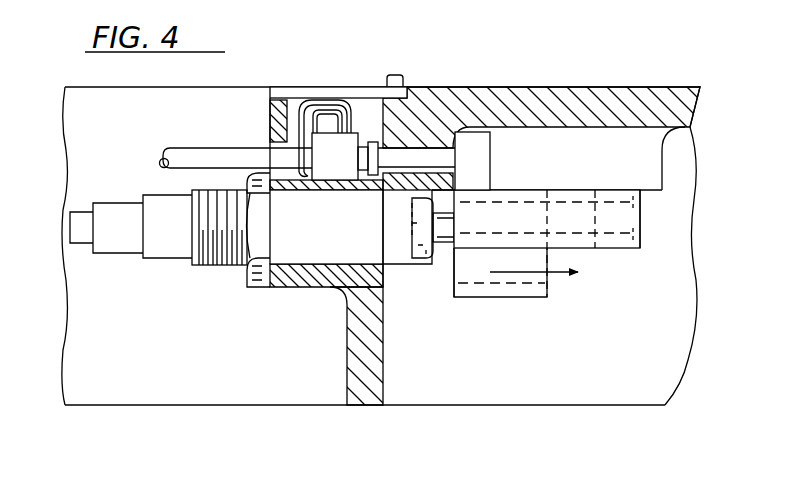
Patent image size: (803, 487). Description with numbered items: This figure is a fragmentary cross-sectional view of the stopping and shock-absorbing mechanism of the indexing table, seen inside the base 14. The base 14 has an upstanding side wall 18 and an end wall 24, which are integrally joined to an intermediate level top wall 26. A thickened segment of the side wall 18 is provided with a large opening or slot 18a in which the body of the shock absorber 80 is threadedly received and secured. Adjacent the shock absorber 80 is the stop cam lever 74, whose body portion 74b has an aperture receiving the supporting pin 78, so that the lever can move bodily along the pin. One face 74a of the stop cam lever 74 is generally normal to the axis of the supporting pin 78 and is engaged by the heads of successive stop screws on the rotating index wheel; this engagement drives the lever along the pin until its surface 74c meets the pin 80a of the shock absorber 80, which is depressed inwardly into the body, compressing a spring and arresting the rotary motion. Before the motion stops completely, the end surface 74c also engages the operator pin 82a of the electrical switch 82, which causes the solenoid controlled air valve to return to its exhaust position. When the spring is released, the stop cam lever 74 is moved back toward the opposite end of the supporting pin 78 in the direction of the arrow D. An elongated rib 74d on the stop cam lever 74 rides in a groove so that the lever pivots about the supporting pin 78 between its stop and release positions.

The base 14 is at (110, 409).
The side wall 18 is at (218, 362).
The opening or slot 18a is at (313, 268).
The end wall 24 is at (372, 342).
The top wall 26 is at (587, 103).
The stop cam lever 74 is at (510, 300).
The stop pin engaging surface 74a is at (490, 138).
The body portion 74b is at (620, 253).
The end surface 74c is at (443, 273).
The elongated rib 74d is at (480, 298).
The supporting pin 78 is at (628, 215).
The shock absorber 80 is at (393, 253).
The pin 80a is at (452, 223).
The electrical switch 82 is at (335, 152).
The operator pin 82a is at (458, 158).
The arrow D is at (533, 298).